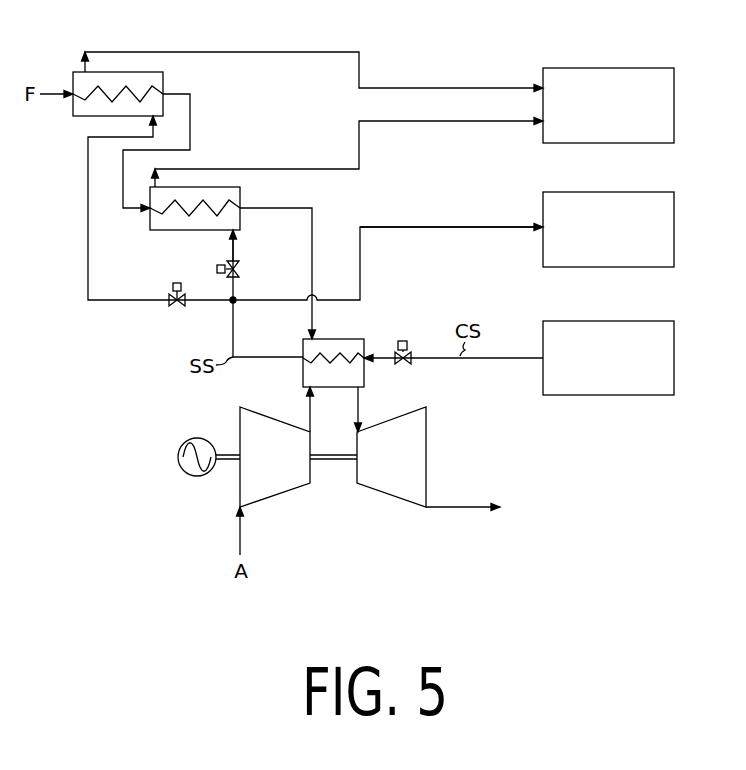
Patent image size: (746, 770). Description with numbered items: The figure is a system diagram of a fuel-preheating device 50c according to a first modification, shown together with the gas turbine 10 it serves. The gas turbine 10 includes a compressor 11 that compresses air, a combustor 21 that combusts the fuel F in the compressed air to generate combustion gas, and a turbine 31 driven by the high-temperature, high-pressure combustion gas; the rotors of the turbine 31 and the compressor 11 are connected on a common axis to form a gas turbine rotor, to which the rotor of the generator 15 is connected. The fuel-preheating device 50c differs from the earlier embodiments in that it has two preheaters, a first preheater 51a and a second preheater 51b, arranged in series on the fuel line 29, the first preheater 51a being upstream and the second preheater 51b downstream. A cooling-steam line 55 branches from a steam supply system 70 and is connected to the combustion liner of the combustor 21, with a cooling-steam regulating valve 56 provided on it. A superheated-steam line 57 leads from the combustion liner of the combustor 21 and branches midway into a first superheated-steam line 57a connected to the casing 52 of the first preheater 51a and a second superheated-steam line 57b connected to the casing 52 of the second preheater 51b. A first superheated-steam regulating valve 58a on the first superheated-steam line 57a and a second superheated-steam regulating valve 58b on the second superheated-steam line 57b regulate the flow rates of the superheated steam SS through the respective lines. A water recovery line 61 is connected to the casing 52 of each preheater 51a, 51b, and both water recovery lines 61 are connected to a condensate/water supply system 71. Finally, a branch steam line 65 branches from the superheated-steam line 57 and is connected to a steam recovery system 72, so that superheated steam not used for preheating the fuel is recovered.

The gas turbine 10 is at (337, 506).
The compressor 11 is at (272, 499).
The generator 15 is at (197, 479).
The combustor 21 is at (301, 384).
The fuel line 29 is at (51, 90).
The turbine 31 is at (396, 498).
The fuel-preheating device 50c is at (72, 239).
The first preheater 51a is at (77, 118).
The second preheater 51b is at (174, 232).
The casing 52 is at (165, 75).
The cooling-steam line 55 is at (500, 361).
The cooling-steam regulating valve 56 is at (407, 347).
The superheated-steam line 57 is at (233, 323).
The first superheated-steam line 57a is at (98, 302).
The second superheated-steam line 57b is at (238, 245).
The first superheated-steam regulating valve 58a is at (171, 307).
The second superheated-steam regulating valve 58b is at (242, 270).
The water recovery line 61 is at (293, 49).
The branch steam line 65 is at (445, 224).
The steam supply system 70 is at (614, 319).
The condensate/water supply system 71 is at (614, 67).
The steam recovery system 72 is at (614, 191).